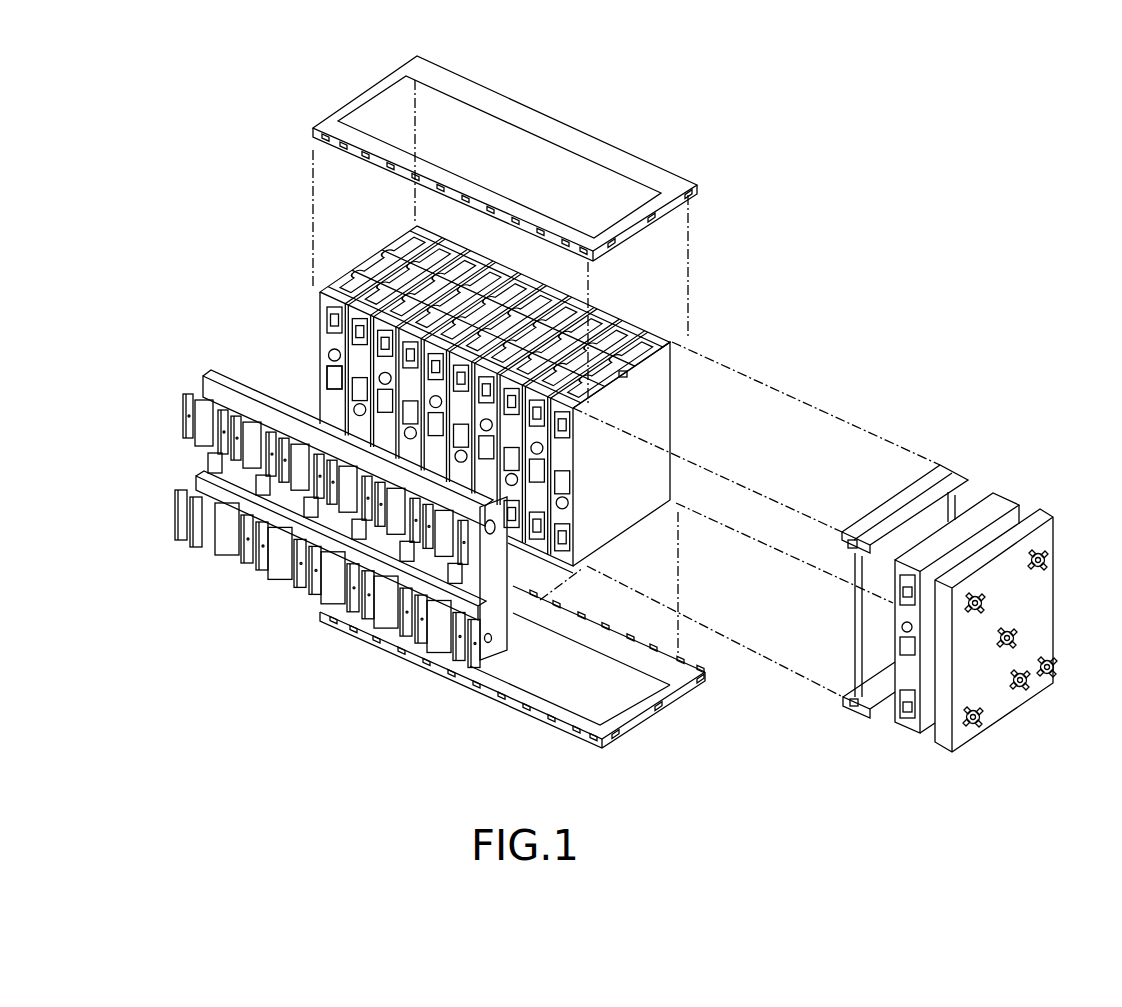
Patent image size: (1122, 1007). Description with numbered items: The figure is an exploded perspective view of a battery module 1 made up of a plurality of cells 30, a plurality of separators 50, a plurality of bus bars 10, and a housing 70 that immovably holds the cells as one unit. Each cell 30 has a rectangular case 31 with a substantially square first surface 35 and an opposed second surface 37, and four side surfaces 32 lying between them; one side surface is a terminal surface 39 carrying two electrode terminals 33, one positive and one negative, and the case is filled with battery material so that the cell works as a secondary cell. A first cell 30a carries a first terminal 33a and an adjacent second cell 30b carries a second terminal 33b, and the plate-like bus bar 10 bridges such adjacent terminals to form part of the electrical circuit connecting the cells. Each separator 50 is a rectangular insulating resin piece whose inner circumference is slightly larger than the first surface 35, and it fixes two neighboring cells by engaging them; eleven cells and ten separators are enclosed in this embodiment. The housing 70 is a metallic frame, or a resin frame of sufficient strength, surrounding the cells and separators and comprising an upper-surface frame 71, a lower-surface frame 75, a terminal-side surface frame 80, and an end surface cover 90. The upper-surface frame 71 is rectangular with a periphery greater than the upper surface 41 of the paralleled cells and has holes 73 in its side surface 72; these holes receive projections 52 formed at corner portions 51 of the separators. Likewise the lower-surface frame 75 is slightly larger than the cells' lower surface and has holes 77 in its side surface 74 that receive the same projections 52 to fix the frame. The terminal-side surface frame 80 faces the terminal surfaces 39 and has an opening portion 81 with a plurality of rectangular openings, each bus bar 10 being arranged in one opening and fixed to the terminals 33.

The battery module 1 is at (965, 155).
The bus bar 10 is at (163, 416).
The cell 30 is at (1036, 462).
The first cell 30a is at (1026, 500).
The second cell 30b is at (683, 350).
The case 31 is at (997, 497).
The side surface 32 is at (990, 502).
The electrode terminal 33 is at (322, 300).
The first terminal 33a is at (900, 606).
The second terminal 33b is at (575, 436).
The first surface 35 is at (935, 718).
The second surface 37 is at (668, 440).
The terminal surface 39 is at (322, 390).
The upper surface 41 is at (632, 320).
The separator 50 is at (950, 460).
The corner portion 51 is at (848, 545).
The projection 52 is at (853, 562).
The housing 70 is at (340, 78).
The upper-surface frame 71 is at (503, 92).
The side surface 72 is at (313, 135).
The hole 73 is at (365, 150).
The side surface 74 is at (507, 712).
The lower-surface frame 75 is at (637, 735).
The hole 77 is at (420, 672).
The terminal-side surface frame 80 is at (185, 362).
The opening portion 81 is at (335, 590).
The end surface cover 90 is at (1060, 590).